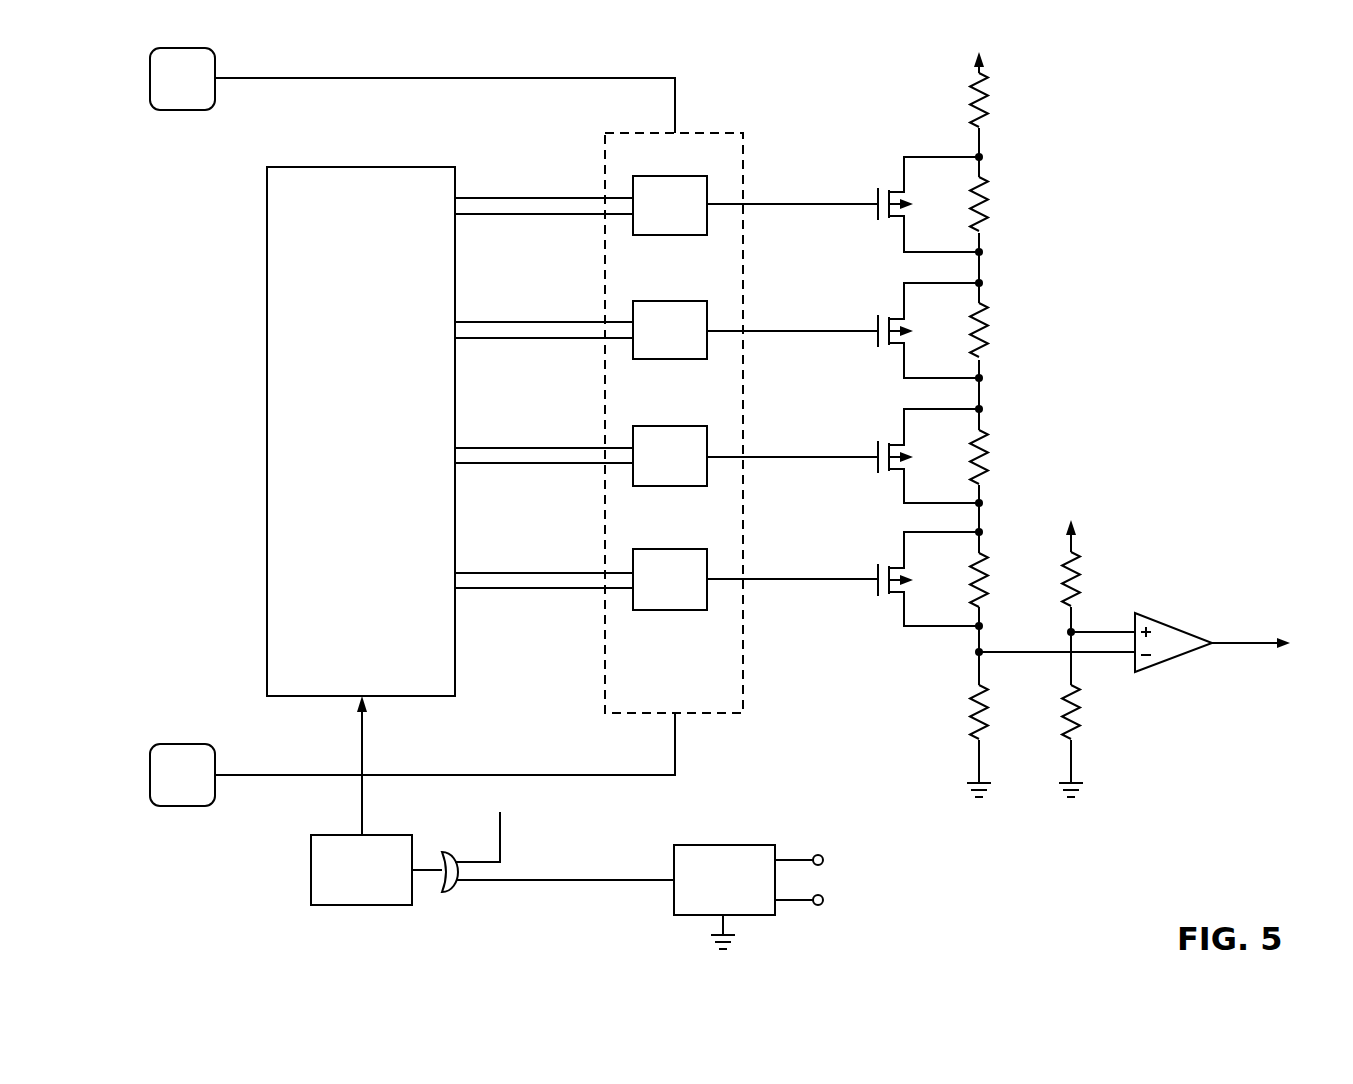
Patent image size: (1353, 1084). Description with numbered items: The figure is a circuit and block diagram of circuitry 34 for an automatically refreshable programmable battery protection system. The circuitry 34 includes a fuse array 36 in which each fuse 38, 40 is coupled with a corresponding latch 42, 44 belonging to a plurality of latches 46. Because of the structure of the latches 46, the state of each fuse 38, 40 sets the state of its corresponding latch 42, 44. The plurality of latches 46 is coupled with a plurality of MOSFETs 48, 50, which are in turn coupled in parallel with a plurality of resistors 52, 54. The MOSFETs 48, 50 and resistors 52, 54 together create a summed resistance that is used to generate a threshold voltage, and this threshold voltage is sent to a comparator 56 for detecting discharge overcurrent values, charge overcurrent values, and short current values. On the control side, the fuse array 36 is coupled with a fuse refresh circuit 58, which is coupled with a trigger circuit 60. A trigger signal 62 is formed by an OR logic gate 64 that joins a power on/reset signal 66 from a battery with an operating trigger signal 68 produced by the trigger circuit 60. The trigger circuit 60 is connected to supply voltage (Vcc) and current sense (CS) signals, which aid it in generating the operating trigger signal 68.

The circuitry 34 is at (1242, 113).
The fuse array 36 is at (267, 432).
The fuse 38 is at (457, 196).
The fuse 40 is at (457, 321).
The latch 42 is at (686, 176).
The latch 44 is at (686, 301).
The plurality of latches 46 is at (713, 714).
The MOSFET 48 is at (877, 213).
The MOSFET 50 is at (877, 340).
The resistor 52 is at (986, 207).
The resistor 54 is at (986, 334).
The comparator 56 is at (1175, 628).
The fuse refresh circuit 58 is at (362, 906).
The trigger circuit 60 is at (728, 845).
The trigger signal 62 is at (428, 873).
The OR logic gate 64 is at (446, 852).
The power on/reset signal 66 is at (503, 838).
The operating trigger signal 68 is at (550, 880).